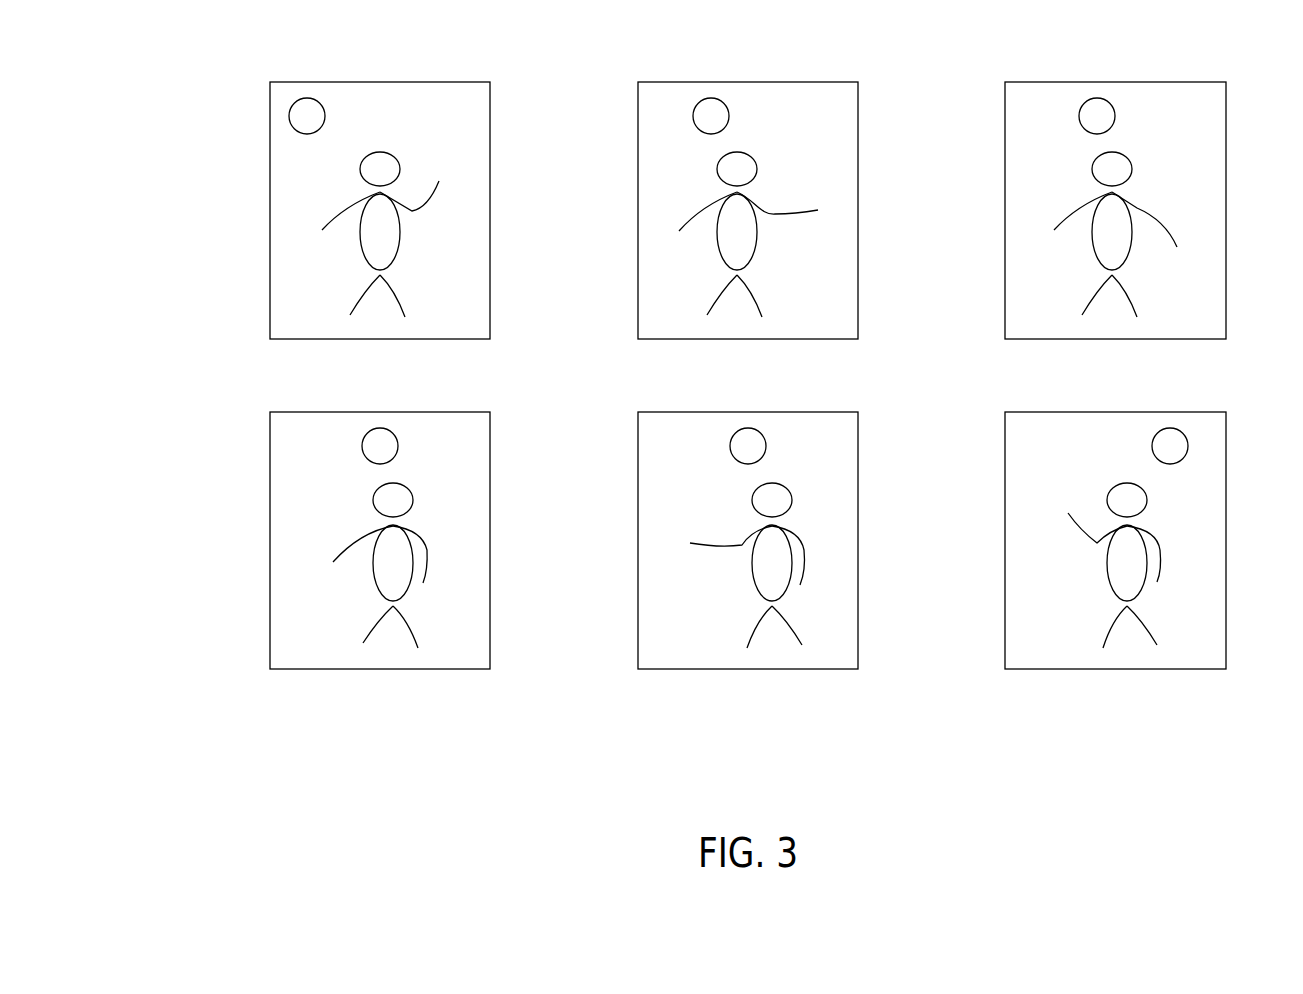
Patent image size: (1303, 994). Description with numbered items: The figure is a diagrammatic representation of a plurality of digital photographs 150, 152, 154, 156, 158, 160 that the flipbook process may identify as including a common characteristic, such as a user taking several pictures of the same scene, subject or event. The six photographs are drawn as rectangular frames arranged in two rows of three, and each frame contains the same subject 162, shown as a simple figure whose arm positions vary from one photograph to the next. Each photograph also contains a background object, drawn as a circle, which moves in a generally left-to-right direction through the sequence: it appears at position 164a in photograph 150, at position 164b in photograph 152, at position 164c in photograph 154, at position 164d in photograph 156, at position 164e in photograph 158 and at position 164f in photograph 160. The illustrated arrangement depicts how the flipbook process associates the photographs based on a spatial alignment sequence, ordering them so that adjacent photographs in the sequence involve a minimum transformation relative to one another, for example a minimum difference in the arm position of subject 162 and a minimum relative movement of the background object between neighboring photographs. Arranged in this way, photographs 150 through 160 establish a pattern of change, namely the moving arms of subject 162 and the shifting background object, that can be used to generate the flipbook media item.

The digital photograph 150 is at (380, 80).
The digital photograph 152 is at (748, 80).
The digital photograph 154 is at (1115, 80).
The digital photograph 156 is at (382, 670).
The digital photograph 158 is at (747, 670).
The digital photograph 160 is at (1135, 670).
The subject 162 is at (343, 245).
The background object 164a is at (289, 116).
The background object 164b is at (693, 116).
The background object 164c is at (1079, 116).
The background object 164d is at (362, 447).
The background object 164e is at (766, 447).
The background object 164f is at (1188, 447).